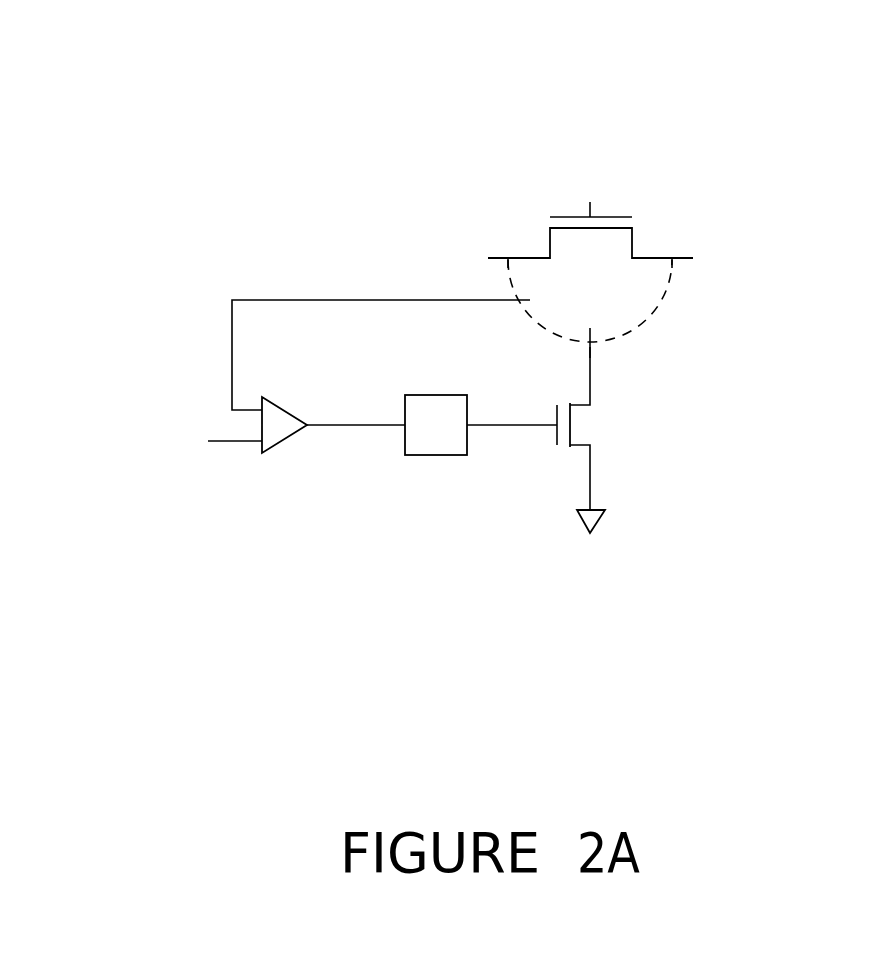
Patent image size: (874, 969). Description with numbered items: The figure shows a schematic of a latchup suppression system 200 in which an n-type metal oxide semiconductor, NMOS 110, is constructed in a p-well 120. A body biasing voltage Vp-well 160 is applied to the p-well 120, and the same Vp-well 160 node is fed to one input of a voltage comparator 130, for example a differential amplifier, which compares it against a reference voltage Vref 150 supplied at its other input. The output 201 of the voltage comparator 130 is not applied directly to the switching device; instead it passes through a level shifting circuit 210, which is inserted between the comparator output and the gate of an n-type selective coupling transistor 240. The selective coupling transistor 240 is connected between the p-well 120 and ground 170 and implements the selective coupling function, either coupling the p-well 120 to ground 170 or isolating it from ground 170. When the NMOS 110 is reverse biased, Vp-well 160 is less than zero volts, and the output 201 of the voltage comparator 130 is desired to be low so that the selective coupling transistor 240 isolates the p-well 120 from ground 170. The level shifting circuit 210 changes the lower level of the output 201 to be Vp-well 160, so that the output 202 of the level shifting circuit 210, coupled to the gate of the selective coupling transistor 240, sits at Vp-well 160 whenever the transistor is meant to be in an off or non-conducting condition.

The latchup suppression system 200 is at (72, 43).
The NMOS 110 is at (618, 207).
The p-well 120 is at (642, 297).
The body biasing voltage Vp-well 160 is at (282, 300).
The voltage comparator 130 is at (283, 407).
The reference voltage Vref 150 is at (222, 442).
The output of voltage comparator 201 is at (367, 425).
The level shifting circuit 210 is at (435, 445).
The output of level shifting circuit 202 is at (528, 426).
The selective coupling transistor 240 is at (600, 424).
The ground 170 is at (600, 523).